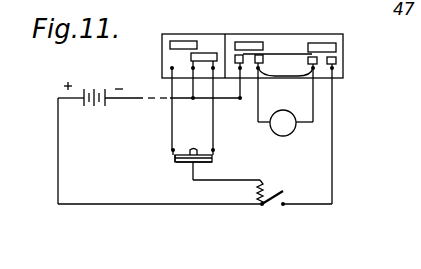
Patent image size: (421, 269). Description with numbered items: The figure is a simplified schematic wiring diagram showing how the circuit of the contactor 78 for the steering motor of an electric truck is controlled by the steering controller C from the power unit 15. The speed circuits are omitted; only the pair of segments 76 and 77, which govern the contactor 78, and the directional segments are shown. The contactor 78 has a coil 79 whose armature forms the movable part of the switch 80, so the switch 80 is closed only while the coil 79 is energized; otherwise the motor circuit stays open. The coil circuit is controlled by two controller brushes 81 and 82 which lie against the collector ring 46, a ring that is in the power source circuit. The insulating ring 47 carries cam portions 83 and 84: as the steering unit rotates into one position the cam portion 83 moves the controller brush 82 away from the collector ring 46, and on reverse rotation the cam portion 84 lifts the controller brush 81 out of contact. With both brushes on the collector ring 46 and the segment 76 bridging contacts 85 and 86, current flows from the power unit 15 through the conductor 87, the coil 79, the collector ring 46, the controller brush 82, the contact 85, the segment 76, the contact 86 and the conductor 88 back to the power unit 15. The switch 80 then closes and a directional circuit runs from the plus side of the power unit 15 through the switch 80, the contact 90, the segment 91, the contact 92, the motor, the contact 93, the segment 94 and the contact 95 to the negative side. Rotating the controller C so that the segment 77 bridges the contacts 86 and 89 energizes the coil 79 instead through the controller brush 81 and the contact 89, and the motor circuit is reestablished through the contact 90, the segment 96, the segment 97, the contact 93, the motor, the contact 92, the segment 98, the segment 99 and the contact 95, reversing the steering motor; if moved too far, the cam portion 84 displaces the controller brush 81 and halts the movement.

The power unit 15 is at (83, 92).
The collector ring 46 is at (188, 169).
The insulating ring 47 is at (291, 132).
The segment 76 is at (181, 41).
The segment 77 is at (204, 53).
The contactor 78 is at (273, 209).
The coil 79 is at (258, 190).
The switch 80 is at (286, 191).
The controller brush 81 is at (212, 167).
The controller brush 82 is at (172, 168).
The cam portion 83 is at (184, 153).
The cam portion 84 is at (196, 149).
The contact 85 is at (172, 68).
The contact 86 is at (192, 67).
The conductor 87 is at (59, 167).
The conductor 88 is at (143, 99).
The contact 89 is at (214, 70).
The contact 90 is at (341, 69).
The segment 91 is at (337, 47).
The contact 92 is at (314, 69).
The contact 93 is at (259, 70).
The segment 94 is at (251, 42).
The contact 95 is at (241, 70).
The segment 96 is at (337, 61).
The segment 97 is at (263, 54).
The segment 98 is at (337, 53).
The segment 99 is at (236, 56).
The steering controller C is at (306, 34).